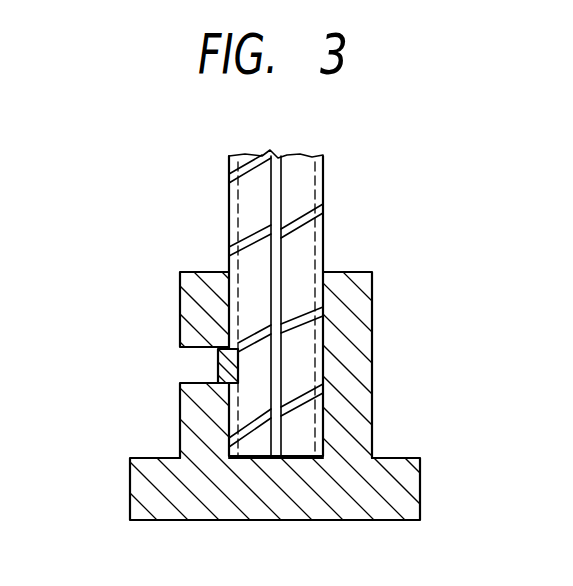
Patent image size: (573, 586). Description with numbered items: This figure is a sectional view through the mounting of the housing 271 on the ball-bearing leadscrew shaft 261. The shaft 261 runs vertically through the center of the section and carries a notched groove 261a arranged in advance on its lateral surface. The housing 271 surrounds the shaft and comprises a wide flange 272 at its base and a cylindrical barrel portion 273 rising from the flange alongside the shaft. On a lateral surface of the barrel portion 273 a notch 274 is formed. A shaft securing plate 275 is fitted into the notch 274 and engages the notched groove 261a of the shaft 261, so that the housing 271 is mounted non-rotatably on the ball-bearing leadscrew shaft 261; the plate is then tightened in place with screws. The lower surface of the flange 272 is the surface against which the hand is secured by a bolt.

The ball-bearing leadscrew shaft 261 is at (307, 183).
The notched groove 261a is at (218, 367).
The housing 271 is at (179, 265).
The flange 272 is at (133, 488).
The cylindrical barrel portion 273 is at (362, 352).
The notch 274 is at (192, 380).
The shaft securing plate 275 is at (218, 353).